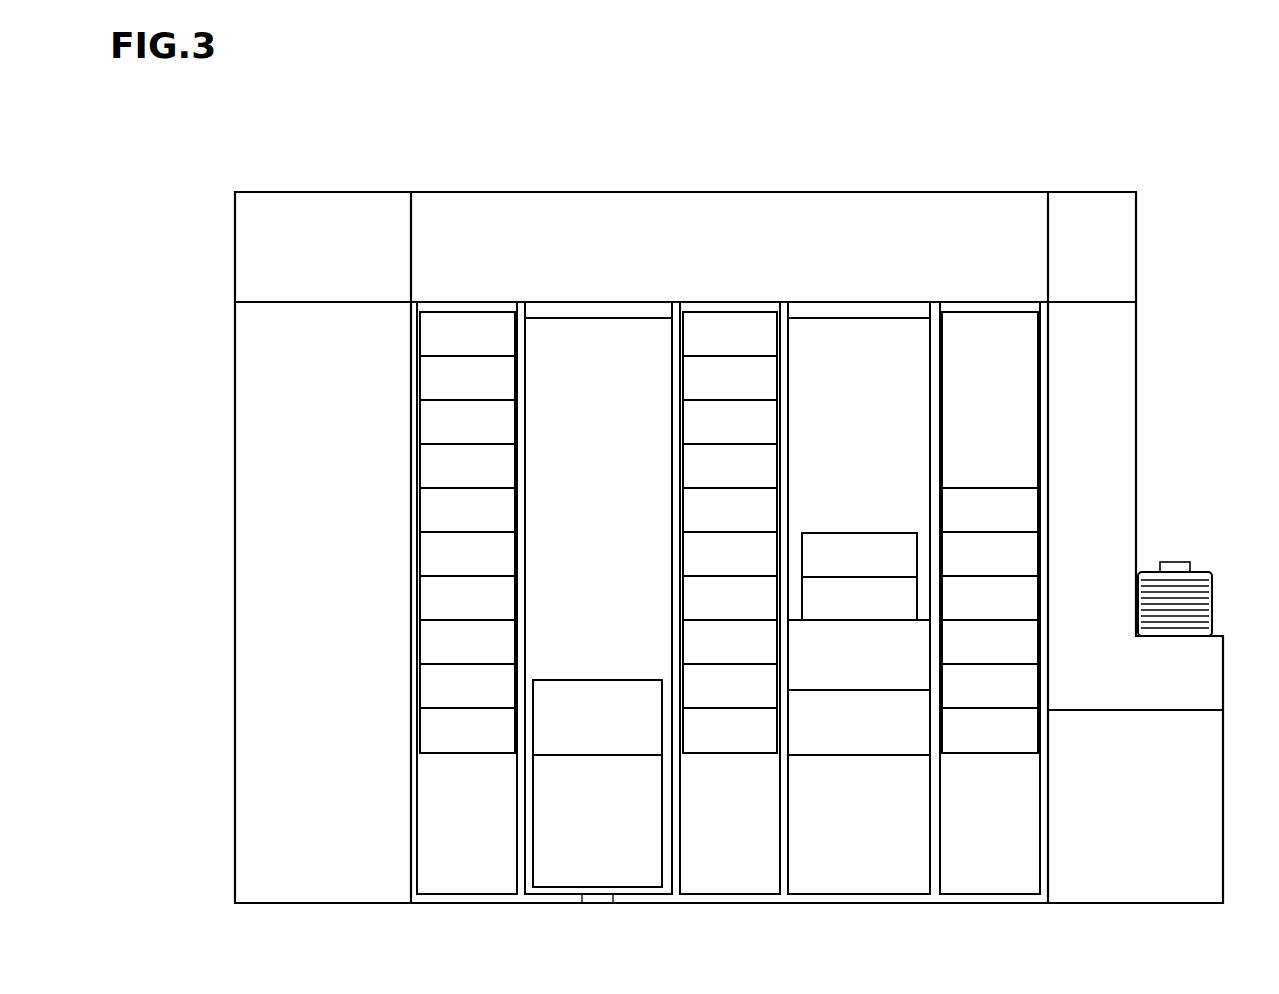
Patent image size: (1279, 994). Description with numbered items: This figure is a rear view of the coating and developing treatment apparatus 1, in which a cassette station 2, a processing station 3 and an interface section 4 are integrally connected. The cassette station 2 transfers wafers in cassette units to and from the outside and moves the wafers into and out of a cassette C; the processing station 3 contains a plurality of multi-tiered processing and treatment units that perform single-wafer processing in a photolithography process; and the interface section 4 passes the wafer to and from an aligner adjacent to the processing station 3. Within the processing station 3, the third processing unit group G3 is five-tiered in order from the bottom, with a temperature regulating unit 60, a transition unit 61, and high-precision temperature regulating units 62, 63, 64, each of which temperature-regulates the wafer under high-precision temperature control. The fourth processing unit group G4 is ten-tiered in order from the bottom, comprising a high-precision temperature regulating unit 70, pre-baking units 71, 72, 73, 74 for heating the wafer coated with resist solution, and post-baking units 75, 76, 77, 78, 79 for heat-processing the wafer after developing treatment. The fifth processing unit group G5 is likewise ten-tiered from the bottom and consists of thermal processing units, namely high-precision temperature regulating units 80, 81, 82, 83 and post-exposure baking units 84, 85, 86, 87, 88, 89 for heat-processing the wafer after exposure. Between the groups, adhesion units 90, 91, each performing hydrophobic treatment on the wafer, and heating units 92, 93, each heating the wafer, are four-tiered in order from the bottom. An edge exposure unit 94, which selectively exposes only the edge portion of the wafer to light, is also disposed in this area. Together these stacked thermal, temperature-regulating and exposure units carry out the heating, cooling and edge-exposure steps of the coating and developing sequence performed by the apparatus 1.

The coating and developing treatment apparatus 1 is at (827, 146).
The cassette station 2 is at (1100, 192).
The processing station 3 is at (742, 192).
The interface section 4 is at (375, 192).
The temperature regulating unit 60 is at (1040, 696).
The transition unit 61 is at (1040, 653).
The high-precision temperature regulating unit 62 is at (1040, 601).
The high-precision temperature regulating unit 63 is at (1040, 558).
The high-precision temperature regulating unit 64 is at (1040, 514).
The high-precision temperature regulating unit 70 is at (752, 748).
The pre-baking unit 71 is at (683, 674).
The pre-baking unit 72 is at (683, 642).
The pre-baking unit 73 is at (683, 604).
The pre-baking unit 74 is at (683, 563).
The post-baking unit 75 is at (683, 519).
The post-baking unit 76 is at (683, 475).
The post-baking unit 77 is at (683, 431).
The post-baking unit 78 is at (683, 387).
The post-baking unit 79 is at (683, 343).
The high-precision temperature regulating unit 80 is at (418, 734).
The high-precision temperature regulating unit 81 is at (418, 688).
The high-precision temperature regulating unit 82 is at (418, 643).
The high-precision temperature regulating unit 83 is at (418, 599).
The post-exposure baking unit 84 is at (418, 555).
The post-exposure baking unit 85 is at (418, 511).
The post-exposure baking unit 86 is at (418, 466).
The post-exposure baking unit 87 is at (418, 422).
The post-exposure baking unit 88 is at (418, 377).
The post-exposure baking unit 89 is at (418, 332).
The adhesion unit 90 is at (891, 745).
The adhesion unit 91 is at (823, 683).
The heating unit 92 is at (815, 598).
The heating unit 93 is at (889, 545).
The edge exposure unit 94 is at (603, 745).
The third processing unit group G3 is at (988, 303).
The fourth processing unit group G4 is at (725, 303).
The fifth processing unit group G5 is at (462, 303).
The cassette C is at (1212, 588).